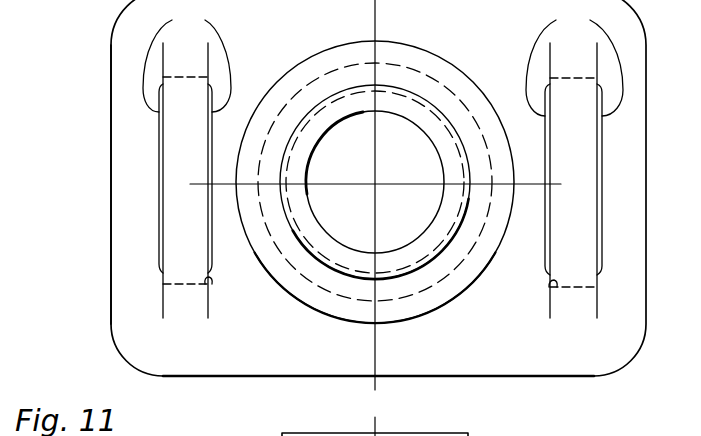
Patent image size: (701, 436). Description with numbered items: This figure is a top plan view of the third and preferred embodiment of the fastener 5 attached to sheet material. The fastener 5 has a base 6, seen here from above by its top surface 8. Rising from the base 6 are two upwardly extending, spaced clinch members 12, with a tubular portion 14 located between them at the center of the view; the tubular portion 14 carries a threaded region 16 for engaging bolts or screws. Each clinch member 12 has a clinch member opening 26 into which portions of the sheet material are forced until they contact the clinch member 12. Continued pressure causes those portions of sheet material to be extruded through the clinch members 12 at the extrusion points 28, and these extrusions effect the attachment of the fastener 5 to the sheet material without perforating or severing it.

The fastener 5 is at (94, 104).
The base 6 is at (111, 267).
The top surface 8 is at (192, 360).
The clinch members 12 is at (181, 180).
The tubular portion 14 is at (427, 97).
The threaded region 16 is at (428, 433).
The clinch member openings 26 is at (212, 283).
The extrusion points 28 is at (383, 63).